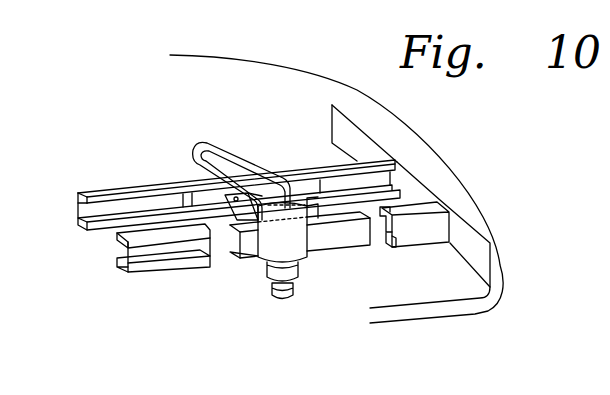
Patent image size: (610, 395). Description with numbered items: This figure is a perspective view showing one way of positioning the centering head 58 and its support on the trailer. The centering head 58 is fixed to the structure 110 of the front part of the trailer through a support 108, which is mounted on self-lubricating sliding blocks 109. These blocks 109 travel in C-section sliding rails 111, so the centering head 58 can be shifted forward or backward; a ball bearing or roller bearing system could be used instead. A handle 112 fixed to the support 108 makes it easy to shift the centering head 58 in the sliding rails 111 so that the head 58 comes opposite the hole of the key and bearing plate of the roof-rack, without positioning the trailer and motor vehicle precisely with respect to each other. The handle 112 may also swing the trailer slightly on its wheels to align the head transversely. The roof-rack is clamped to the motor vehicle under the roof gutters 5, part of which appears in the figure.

The motor vehicle roof gutter 5 is at (456, 277).
The centering head 58 is at (261, 268).
The support 108 is at (315, 202).
The self-lubricating sliding block 109 is at (347, 252).
The structure of the front part of the trailer 110 is at (345, 135).
The C-section sliding rail 111 is at (133, 186).
The handle 112 is at (199, 147).